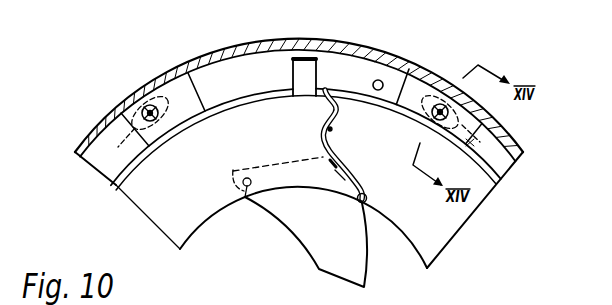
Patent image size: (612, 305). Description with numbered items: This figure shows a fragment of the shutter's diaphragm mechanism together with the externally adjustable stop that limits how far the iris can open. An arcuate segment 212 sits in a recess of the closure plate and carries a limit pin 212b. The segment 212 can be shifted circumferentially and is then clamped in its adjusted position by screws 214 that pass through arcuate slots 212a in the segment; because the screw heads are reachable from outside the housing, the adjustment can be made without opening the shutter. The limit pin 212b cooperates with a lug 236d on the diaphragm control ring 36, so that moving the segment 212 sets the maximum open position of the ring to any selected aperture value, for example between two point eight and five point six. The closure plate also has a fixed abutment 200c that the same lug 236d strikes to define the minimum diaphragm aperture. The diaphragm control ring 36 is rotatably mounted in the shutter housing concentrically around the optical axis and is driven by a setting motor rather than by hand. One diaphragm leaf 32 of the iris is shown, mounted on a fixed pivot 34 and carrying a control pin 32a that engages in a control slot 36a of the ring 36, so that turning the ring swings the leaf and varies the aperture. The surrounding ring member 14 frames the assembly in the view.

The wheel rim / ring member 14 is at (83, 154).
The fixed abutment 200c is at (200, 67).
The arcuate segment 212 is at (247, 85).
The arcuate slots 212a is at (168, 95).
The limit pin 212b is at (382, 82).
The screws 214 is at (137, 108).
The lug 236d is at (316, 74).
The diaphragm control ring 36 is at (143, 202).
The control slot 36a is at (334, 130).
The fixed pivot 34 is at (245, 197).
The diaphragm leaves 32 is at (320, 271).
The control pin 32a is at (332, 180).